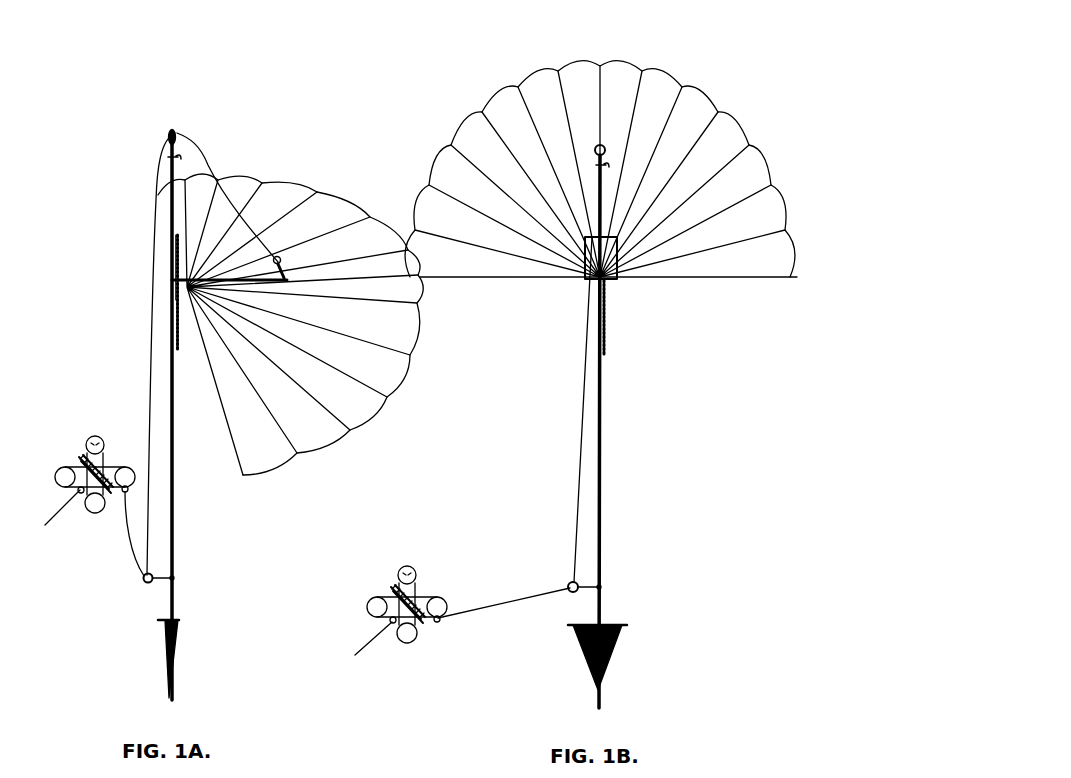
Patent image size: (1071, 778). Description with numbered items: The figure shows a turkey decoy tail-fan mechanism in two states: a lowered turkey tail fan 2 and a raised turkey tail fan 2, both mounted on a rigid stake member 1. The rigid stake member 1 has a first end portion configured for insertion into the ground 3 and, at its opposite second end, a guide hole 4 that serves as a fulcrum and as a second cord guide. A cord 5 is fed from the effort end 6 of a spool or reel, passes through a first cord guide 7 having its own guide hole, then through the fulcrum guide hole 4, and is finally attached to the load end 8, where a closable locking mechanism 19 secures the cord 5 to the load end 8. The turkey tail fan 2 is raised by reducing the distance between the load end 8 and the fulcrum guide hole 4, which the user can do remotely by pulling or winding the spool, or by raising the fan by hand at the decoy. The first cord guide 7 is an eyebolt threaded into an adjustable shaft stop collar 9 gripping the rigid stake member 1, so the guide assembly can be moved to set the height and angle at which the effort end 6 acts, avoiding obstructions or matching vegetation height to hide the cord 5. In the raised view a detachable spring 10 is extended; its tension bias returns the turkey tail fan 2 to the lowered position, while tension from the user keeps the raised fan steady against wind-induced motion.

In FIG. 1A, the rigid stake member 1 is at (176, 497).
In FIG. 1B, the rigid stake member 1 is at (604, 500).
In FIG. 1A, the turkey tail fan 2 is at (393, 402).
In FIG. 1B, the turkey tail fan 2 is at (712, 103).
In FIG. 1A, the first end portion configured for insertion into the ground 3 is at (174, 690).
In FIG. 1A, the guide hole 4 is at (173, 130).
In FIG. 1A, the cord 5 is at (128, 550).
In FIG. 1A, the effort end 6 is at (97, 434).
In FIG. 1A, the first cord guide 7 is at (147, 584).
In FIG. 1A, the load end 8 is at (289, 280).
In FIG. 1A, the shaft stop collar 9 is at (176, 578).
In FIG. 1B, the detachable spring 10 is at (607, 316).
In FIG. 1A, the closable locking mechanism 19 is at (283, 266).